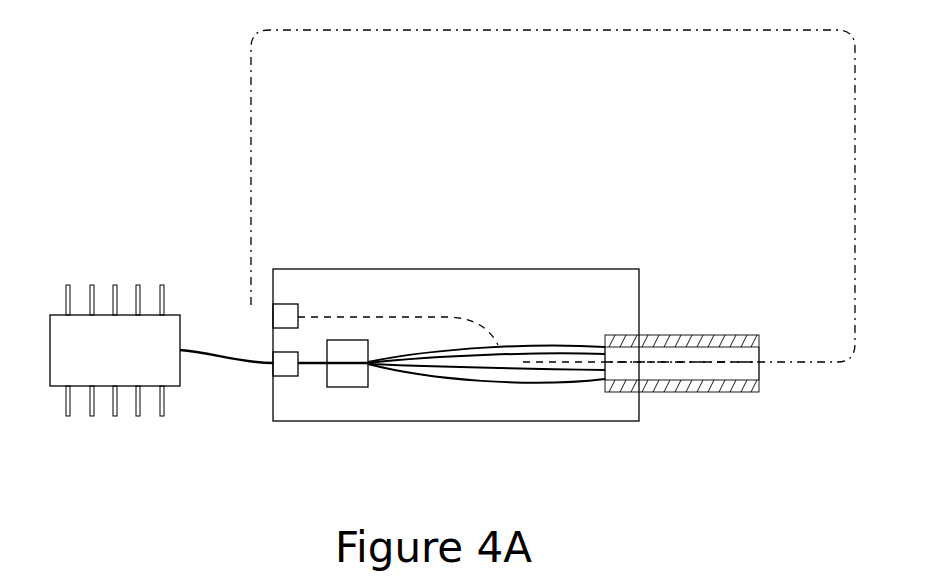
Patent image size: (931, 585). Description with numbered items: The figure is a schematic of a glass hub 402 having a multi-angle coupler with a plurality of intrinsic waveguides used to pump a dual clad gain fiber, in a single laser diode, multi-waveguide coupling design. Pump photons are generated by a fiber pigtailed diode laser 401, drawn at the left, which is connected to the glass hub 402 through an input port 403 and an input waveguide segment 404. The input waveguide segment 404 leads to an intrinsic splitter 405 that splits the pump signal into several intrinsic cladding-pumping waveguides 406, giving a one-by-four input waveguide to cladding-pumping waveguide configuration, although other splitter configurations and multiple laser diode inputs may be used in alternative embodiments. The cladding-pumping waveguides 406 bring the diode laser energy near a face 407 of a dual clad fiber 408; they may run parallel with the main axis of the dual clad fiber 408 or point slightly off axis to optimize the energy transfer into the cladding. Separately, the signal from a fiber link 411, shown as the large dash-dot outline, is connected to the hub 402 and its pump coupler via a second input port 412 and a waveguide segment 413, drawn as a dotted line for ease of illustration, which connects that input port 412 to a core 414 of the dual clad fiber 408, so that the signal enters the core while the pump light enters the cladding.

The fiber pigtailed diode laser 401 is at (81, 388).
The glass hub 402 is at (503, 268).
The input port 403 is at (272, 368).
The input waveguide segment 404 is at (310, 364).
The intrinsic splitter 405 is at (337, 328).
The cladding-pumping waveguides 406 is at (428, 377).
The face 407 is at (587, 335).
The dual clad fiber 408 is at (702, 323).
The fiber link 411 is at (250, 192).
The input port 412 is at (270, 316).
The waveguide segment 413 is at (432, 314).
The core 414 is at (678, 364).